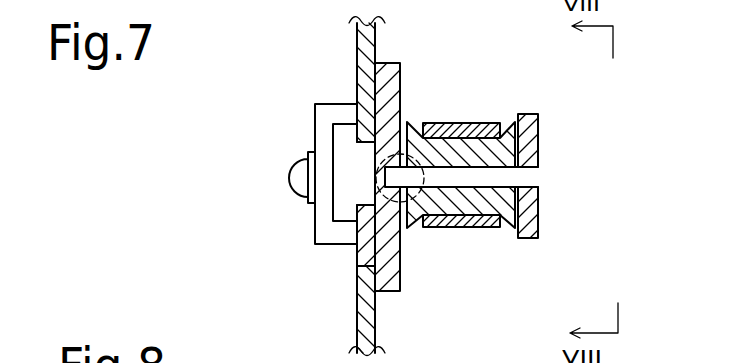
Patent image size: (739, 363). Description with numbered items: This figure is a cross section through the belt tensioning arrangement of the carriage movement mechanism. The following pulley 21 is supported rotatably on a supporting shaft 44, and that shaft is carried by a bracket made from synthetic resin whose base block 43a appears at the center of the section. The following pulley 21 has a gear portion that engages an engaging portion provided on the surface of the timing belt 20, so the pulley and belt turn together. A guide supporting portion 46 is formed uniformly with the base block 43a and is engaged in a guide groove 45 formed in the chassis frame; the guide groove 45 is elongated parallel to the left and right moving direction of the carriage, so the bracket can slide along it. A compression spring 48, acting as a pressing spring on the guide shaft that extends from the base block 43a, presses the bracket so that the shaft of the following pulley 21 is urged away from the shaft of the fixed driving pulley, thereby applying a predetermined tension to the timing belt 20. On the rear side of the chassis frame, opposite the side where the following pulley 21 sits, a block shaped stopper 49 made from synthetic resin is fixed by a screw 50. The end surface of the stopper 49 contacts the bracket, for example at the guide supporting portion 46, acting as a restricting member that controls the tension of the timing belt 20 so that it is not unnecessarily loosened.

The timing belt 20 is at (476, 127).
The following pulley 21 is at (500, 150).
The base block 43a is at (393, 82).
The supporting shaft 44 is at (510, 178).
The guide groove 45 is at (364, 199).
The guide supporting portion 46 is at (343, 143).
The compression spring 48 is at (418, 206).
The stopper 49 is at (315, 121).
The screw 50 is at (293, 178).